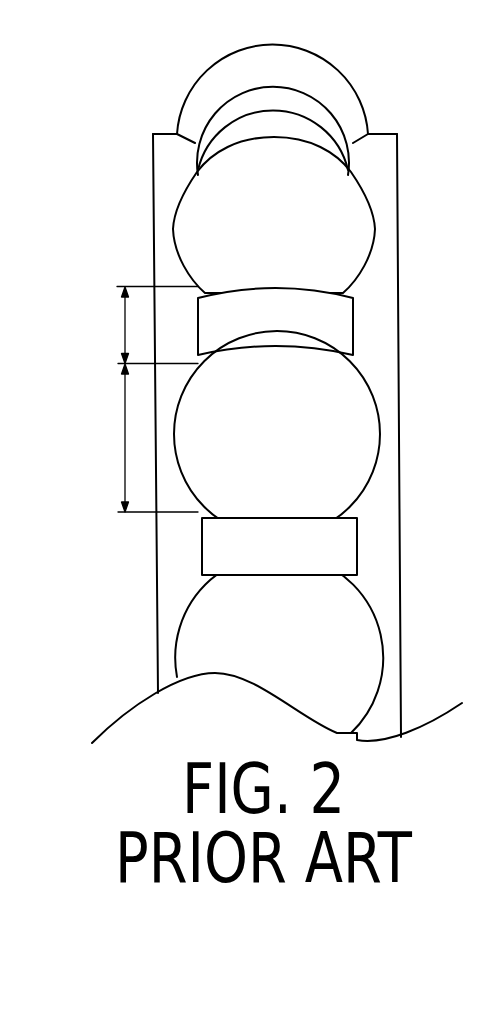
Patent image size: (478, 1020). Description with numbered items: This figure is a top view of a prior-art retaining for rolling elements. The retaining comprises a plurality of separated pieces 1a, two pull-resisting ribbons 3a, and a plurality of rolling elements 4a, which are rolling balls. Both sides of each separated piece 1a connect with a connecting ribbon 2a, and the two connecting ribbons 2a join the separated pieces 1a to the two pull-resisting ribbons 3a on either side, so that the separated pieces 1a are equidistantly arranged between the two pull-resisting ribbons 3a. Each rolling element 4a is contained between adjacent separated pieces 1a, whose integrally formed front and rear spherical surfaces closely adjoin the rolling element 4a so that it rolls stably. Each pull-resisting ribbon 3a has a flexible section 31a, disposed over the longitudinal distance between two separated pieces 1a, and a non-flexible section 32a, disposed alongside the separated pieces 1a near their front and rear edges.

The separated piece 1a is at (333, 318).
The connecting ribbon 2a is at (365, 340).
The pull-resisting ribbon 3a is at (383, 440).
The rolling element 4a is at (332, 470).
The flexible section 31a is at (125, 450).
The non-flexible section 32a is at (123, 330).